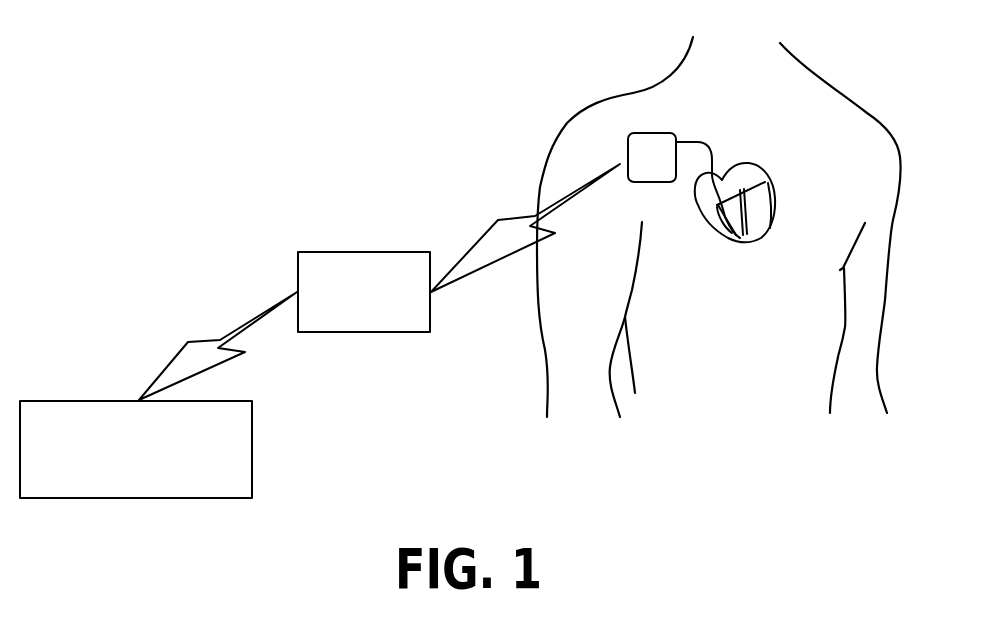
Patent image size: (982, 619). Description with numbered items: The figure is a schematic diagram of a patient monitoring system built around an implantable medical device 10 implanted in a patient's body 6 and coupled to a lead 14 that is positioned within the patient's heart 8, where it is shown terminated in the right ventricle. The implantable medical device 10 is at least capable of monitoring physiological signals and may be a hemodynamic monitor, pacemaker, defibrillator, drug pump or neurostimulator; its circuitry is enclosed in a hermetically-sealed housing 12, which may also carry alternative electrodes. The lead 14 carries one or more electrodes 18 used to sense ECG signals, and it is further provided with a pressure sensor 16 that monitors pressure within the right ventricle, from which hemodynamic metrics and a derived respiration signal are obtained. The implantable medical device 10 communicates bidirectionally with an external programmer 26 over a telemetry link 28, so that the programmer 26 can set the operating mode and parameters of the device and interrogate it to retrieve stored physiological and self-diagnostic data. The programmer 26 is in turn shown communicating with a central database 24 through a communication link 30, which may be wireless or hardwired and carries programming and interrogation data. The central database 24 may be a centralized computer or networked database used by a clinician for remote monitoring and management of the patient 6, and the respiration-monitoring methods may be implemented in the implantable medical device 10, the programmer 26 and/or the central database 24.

The patient's body 6 is at (837, 90).
The heart 8 is at (766, 165).
The implantable medical device 10 is at (523, 63).
The hermetically-sealed housing 12 is at (648, 183).
The lead 14 is at (683, 140).
The pressure sensor 16 is at (726, 240).
The electrode 18 is at (757, 242).
The central database 24 is at (80, 400).
The external programmer 26 is at (352, 252).
The telemetry link 28 is at (490, 255).
The communication link 30 is at (268, 300).